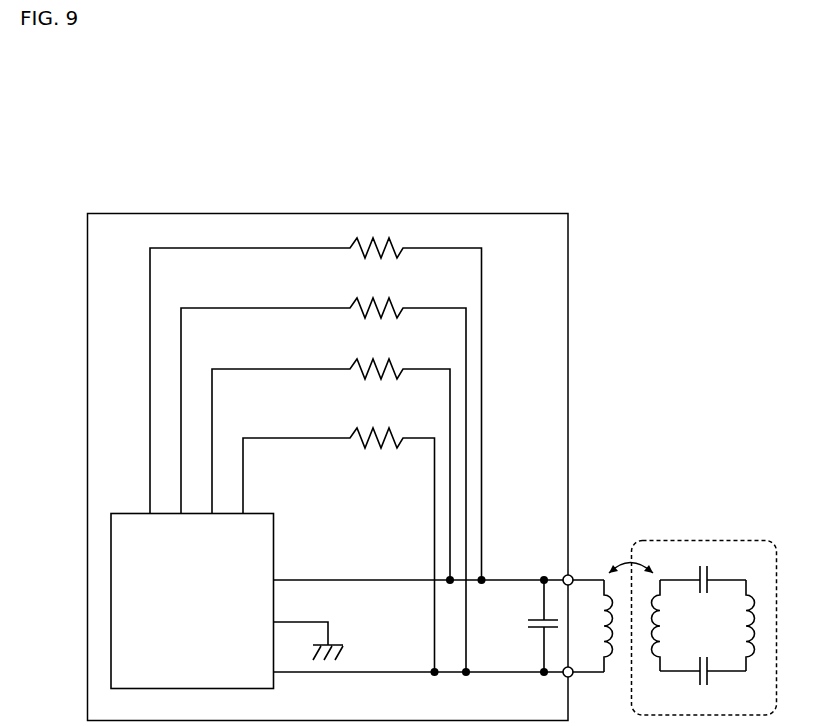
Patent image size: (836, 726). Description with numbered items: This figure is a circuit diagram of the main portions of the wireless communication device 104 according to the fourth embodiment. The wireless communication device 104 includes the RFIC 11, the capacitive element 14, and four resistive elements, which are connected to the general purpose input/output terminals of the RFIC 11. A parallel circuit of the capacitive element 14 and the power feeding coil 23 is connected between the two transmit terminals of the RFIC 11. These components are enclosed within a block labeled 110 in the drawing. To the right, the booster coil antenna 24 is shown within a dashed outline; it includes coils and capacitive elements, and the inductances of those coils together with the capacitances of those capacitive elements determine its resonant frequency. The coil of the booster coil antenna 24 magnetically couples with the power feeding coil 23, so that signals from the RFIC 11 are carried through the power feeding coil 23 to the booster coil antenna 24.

The wireless communication device 104 is at (747, 148).
The power transmitting device 110 is at (568, 213).
The RFIC 11 is at (273, 524).
The capacitive element 14 is at (527, 622).
The power feeding coil 23 is at (600, 633).
The booster coil antenna 24 is at (725, 540).